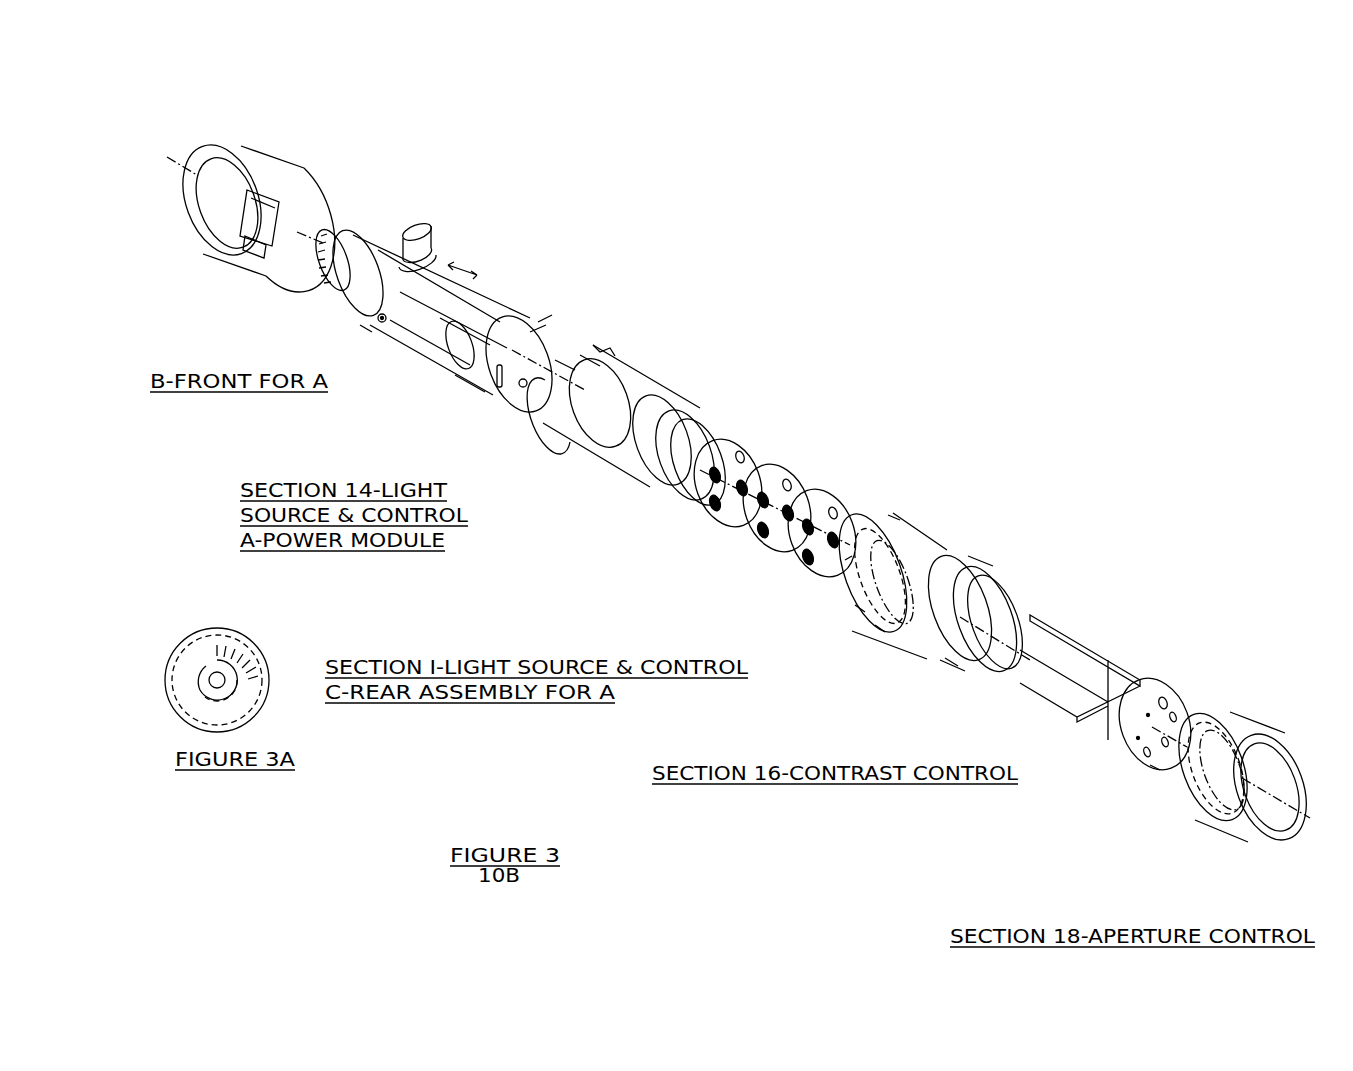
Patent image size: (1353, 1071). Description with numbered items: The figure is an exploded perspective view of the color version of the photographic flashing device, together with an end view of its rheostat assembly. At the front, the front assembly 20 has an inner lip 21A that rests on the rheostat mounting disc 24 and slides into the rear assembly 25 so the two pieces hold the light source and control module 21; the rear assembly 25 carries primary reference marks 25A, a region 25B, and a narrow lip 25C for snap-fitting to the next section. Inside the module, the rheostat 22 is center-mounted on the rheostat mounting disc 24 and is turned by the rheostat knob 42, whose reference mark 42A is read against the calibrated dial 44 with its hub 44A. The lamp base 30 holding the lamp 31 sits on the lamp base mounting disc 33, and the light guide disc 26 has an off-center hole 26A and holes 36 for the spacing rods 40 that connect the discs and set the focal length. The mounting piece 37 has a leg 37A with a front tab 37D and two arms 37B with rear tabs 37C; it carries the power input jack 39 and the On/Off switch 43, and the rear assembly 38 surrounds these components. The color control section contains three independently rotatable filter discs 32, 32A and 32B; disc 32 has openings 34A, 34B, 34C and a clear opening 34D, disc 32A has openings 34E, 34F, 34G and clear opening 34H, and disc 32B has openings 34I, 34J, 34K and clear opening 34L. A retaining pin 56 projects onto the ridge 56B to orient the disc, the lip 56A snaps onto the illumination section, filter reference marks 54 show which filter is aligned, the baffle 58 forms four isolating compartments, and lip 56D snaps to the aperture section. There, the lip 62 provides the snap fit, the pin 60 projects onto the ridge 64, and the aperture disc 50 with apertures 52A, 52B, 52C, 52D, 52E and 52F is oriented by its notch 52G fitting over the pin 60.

In FIG. 3, the front assembly 20 is at (262, 150).
In FIG. 3, the inner lip 21A is at (225, 238).
In FIG. 3, the light source and control module 21 is at (445, 355).
In FIG. 3, the rheostat 22 is at (390, 262).
In FIG. 3, the rheostat mounting disc 24 is at (385, 255).
In FIG. 3, the rear assembly 25 is at (657, 377).
In FIG. 3, the primary reference marks 25A is at (633, 430).
In FIG. 3, the tube notch 25B is at (612, 400).
In FIG. 3, the narrow lip 25C is at (677, 458).
In FIG. 3, the light guide disc 26 is at (563, 383).
In FIG. 3, the off-center hole 26A is at (557, 360).
In FIG. 3, the lamp base 30 is at (460, 325).
In FIG. 3, the lamp 31 is at (480, 372).
In FIG. 3, the filter disc 32 is at (730, 440).
In FIG. 3, the filter disc 32A is at (762, 538).
In FIG. 3, the filter disc 32B is at (838, 492).
In FIG. 3, the lamp base mounting disc 33 is at (447, 315).
In FIG. 3, the contrast filter 34A is at (742, 452).
In FIG. 3, the contrast filter 34B is at (718, 470).
In FIG. 3, the contrast filter 34C is at (720, 498).
In FIG. 3, the clear opening 34D is at (744, 483).
In FIG. 3, the filter opening 34E is at (763, 508).
In FIG. 3, the filter opening 34F is at (786, 520).
In FIG. 3, the filter opening 34G is at (806, 535).
In FIG. 3, the clear opening 34H is at (765, 538).
In FIG. 3, the filter opening 34I is at (835, 507).
In FIG. 3, the filter opening 34J is at (836, 533).
In FIG. 3, the filter opening 34K is at (848, 558).
In FIG. 3, the clear opening 34L is at (812, 550).
In FIG. 3, the holes 36 is at (543, 340).
In FIG. 3, the mounting piece 37 is at (440, 276).
In FIG. 3, the leg 37A is at (385, 330).
In FIG. 3, the arms 37B is at (438, 353).
In FIG. 3, the rear tabs 37C is at (550, 315).
In FIG. 3, the front tab 37D is at (337, 293).
In FIG. 3, the rear assembly 38 is at (932, 556).
In FIG. 3, the power input jack 39 is at (380, 322).
In FIG. 3, the spacing rods 40 is at (467, 345).
In FIG. 3, the rheostat knob 42 is at (337, 228).
In FIG. 3, the rheostat knob reference mark 42A is at (348, 234).
In FIG. 3A, the rheostat knob reference mark 42A is at (208, 660).
In FIG. 3, the On/Off switch 43 is at (418, 232).
In FIG. 3, the calibrated dial 44 is at (378, 247).
In FIG. 3A, the dial hub 44A is at (233, 643).
In FIG. 3, the aperture disc 50 is at (1163, 680).
In FIG. 3, the aperture 52A is at (1148, 718).
In FIG. 3, the aperture 52B is at (1138, 741).
In FIG. 3, the aperture 52C is at (1146, 757).
In FIG. 3, the aperture 52D is at (1163, 748).
In FIG. 3, the aperture 52E is at (1175, 714).
In FIG. 3, the aperture 52F is at (1165, 700).
In FIG. 3, the notch 52G is at (1160, 770).
In FIG. 3, the filter reference marks 54 is at (895, 515).
In FIG. 3, the retaining pin 56 is at (926, 600).
In FIG. 3, the lip 56A is at (858, 610).
In FIG. 3, the ridge 56B is at (880, 630).
In FIG. 3, the lip 56D is at (953, 663).
In FIG. 3, the baffle 58 is at (1055, 640).
In FIG. 3, the pin 60 is at (1242, 827).
In FIG. 3, the lip 62 is at (1188, 800).
In FIG. 3, the ridge 64 is at (1220, 820).